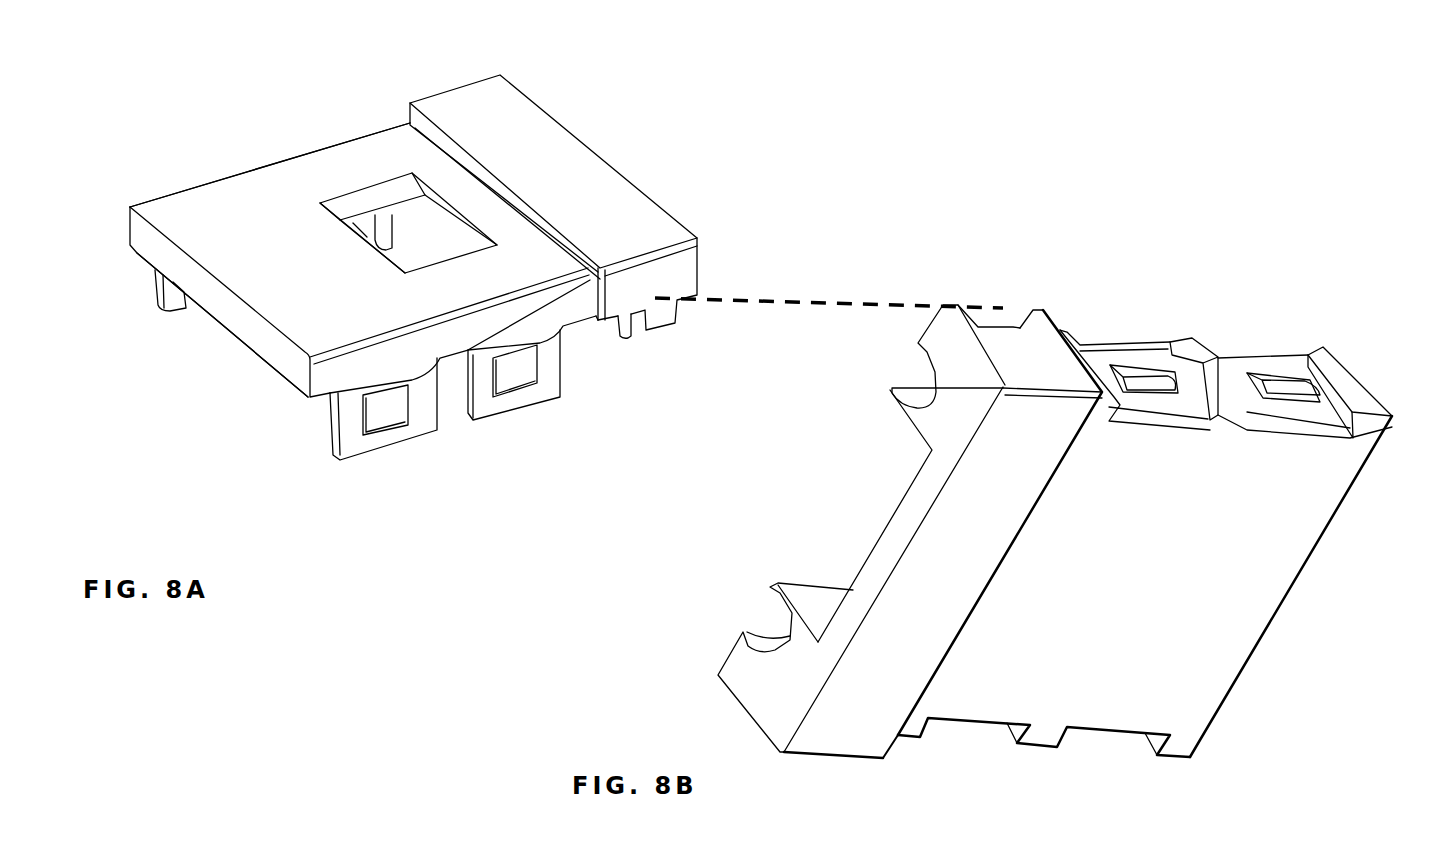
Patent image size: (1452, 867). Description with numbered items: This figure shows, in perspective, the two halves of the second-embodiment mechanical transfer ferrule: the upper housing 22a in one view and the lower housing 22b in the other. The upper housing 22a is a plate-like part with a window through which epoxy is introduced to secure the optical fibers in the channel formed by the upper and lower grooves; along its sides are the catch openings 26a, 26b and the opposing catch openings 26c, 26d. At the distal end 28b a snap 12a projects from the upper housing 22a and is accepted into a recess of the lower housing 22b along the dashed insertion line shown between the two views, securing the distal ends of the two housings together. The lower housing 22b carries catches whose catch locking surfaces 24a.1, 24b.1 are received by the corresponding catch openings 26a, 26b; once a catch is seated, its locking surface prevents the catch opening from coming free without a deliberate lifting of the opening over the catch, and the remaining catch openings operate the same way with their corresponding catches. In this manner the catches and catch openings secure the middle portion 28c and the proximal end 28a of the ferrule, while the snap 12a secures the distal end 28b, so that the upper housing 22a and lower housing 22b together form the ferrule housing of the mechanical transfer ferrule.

In FIG. 8A, the upper housing 22a is at (157, 83).
In FIG. 8B, the lower housing 22b is at (1132, 275).
In FIG. 8A, the catch opening 26a is at (395, 403).
In FIG. 8A, the catch opening 26b is at (518, 375).
In FIG. 8A, the catch opening 26c is at (213, 172).
In FIG. 8A, the catch opening 26d is at (310, 152).
In FIG. 8A, the proximal end 28a is at (197, 343).
In FIG. 8A, the distal end 28b is at (646, 167).
In FIG. 8B, the distal end 28b is at (768, 617).
In FIG. 8A, the middle portion 28c is at (360, 260).
In FIG. 8A, the snap 12a is at (647, 330).
In FIG. 8B, the catch locking surface 24a.1 is at (1140, 385).
In FIG. 8B, the catch locking surface 24b.1 is at (1300, 395).